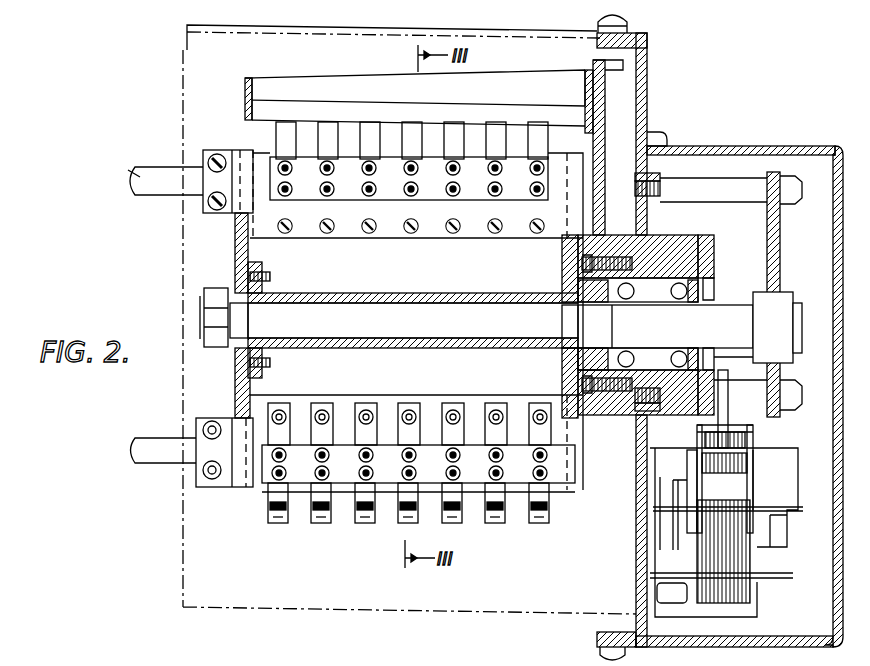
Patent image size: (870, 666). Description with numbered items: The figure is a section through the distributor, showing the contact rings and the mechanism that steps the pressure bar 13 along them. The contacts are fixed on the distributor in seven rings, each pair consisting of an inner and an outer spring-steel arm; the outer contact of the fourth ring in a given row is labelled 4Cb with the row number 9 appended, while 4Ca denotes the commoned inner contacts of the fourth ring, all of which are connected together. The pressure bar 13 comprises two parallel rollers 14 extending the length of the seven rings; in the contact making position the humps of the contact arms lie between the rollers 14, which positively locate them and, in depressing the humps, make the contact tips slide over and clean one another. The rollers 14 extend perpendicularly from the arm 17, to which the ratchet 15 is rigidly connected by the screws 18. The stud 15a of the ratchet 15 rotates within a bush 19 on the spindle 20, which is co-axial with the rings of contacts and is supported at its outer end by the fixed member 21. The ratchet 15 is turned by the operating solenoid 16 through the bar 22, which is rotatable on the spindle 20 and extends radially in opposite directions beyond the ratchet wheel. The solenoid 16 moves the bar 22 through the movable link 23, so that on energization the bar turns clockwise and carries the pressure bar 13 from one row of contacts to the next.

The pressure bar 13 is at (500, 80).
The rollers 14 is at (433, 112).
The ratchet 15 is at (700, 275).
The stud 15a is at (690, 255).
The operating solenoid 16 is at (727, 462).
The arm 17 is at (610, 133).
The screws 18 is at (620, 258).
The bush 19 is at (652, 250).
The spindle 20 is at (703, 322).
The fixed member 21 is at (780, 260).
The bar 22 is at (733, 283).
The movable link 23 is at (723, 410).
The commoned contacts of the fourth ring 4Ca is at (444, 521).
The outer contact of the fourth ring 4Cb is at (403, 524).
The ninth row of contacts 9 is at (414, 511).